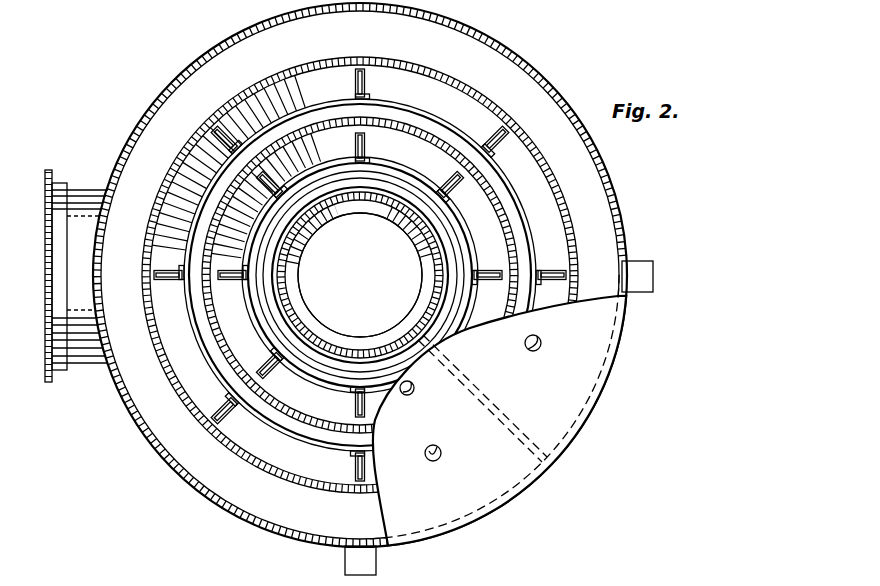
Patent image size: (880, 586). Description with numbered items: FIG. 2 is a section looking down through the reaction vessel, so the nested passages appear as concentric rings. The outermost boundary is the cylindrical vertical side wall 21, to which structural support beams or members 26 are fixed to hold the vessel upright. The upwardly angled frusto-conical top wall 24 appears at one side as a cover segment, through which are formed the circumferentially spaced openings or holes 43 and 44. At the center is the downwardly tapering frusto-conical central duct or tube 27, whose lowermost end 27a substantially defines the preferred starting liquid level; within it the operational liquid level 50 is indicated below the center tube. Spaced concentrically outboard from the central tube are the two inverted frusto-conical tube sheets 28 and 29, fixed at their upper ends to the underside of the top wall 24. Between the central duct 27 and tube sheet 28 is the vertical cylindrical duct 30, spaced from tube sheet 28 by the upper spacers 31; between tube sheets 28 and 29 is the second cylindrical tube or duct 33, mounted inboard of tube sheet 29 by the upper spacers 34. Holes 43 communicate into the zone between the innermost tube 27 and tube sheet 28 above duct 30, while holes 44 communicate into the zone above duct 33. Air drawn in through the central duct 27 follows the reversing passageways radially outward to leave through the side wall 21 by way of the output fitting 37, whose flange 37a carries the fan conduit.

The side wall 21 is at (162, 470).
The top wall 24 is at (578, 400).
The structural support beams or members 26 is at (638, 262).
The central duct or tube 27 is at (312, 324).
The lowermost end of central tube 27a is at (402, 230).
The tube sheet 28 is at (434, 150).
The tube sheet 29 is at (178, 174).
The cylindrical duct 30 is at (330, 380).
The upper spacers 31 is at (372, 150).
The second cylindrical tube or duct 33 is at (404, 108).
The upper spacers 34 is at (357, 72).
The output fitting 37 is at (94, 192).
The flange 37a is at (48, 170).
The openings or holes 43 is at (413, 392).
The openings or holes 44 is at (528, 346).
The operational liquid level 50 is at (360, 275).